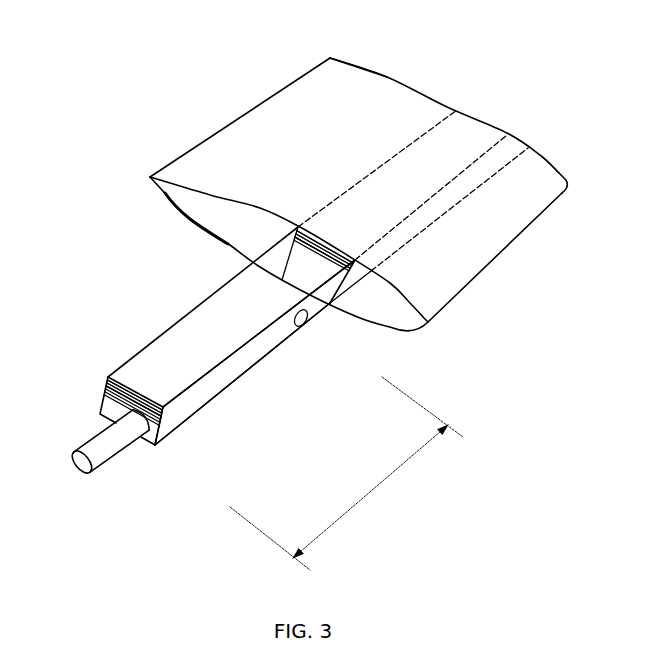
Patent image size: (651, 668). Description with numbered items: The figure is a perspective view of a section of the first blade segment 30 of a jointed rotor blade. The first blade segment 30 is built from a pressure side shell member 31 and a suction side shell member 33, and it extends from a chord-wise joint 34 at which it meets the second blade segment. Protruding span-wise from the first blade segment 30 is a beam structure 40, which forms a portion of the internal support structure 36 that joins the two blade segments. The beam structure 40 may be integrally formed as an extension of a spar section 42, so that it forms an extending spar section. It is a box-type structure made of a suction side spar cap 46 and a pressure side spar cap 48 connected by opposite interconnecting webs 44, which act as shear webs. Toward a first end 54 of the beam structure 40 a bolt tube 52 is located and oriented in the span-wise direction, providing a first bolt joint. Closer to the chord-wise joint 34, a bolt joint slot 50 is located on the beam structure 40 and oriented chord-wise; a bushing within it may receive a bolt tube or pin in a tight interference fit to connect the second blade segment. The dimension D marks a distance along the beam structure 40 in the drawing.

The first blade segment 30 is at (232, 121).
The pressure side shell member 31 is at (380, 77).
The suction side shell member 33 is at (395, 328).
The chord-wise joint 34 is at (172, 204).
The internal support structure 36 is at (239, 391).
The beam structure 40 is at (128, 356).
The spar section 42 is at (478, 119).
The interconnecting web 44 is at (273, 350).
The suction side spar cap 46 is at (291, 291).
The pressure side spar cap 48 is at (324, 226).
The bolt joint slot 50 is at (306, 328).
The bolt tube 52 is at (108, 455).
The first end 54 is at (165, 447).
The distance D is at (346, 473).